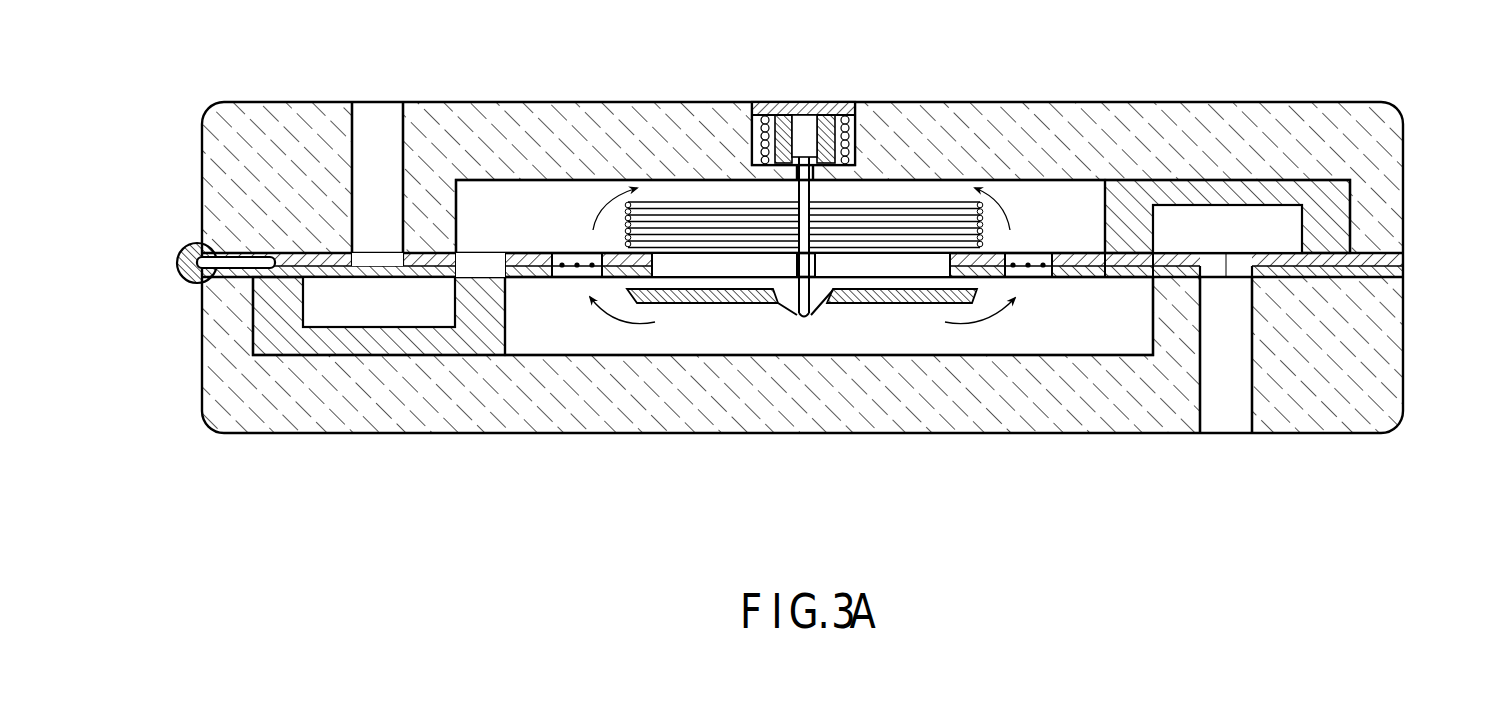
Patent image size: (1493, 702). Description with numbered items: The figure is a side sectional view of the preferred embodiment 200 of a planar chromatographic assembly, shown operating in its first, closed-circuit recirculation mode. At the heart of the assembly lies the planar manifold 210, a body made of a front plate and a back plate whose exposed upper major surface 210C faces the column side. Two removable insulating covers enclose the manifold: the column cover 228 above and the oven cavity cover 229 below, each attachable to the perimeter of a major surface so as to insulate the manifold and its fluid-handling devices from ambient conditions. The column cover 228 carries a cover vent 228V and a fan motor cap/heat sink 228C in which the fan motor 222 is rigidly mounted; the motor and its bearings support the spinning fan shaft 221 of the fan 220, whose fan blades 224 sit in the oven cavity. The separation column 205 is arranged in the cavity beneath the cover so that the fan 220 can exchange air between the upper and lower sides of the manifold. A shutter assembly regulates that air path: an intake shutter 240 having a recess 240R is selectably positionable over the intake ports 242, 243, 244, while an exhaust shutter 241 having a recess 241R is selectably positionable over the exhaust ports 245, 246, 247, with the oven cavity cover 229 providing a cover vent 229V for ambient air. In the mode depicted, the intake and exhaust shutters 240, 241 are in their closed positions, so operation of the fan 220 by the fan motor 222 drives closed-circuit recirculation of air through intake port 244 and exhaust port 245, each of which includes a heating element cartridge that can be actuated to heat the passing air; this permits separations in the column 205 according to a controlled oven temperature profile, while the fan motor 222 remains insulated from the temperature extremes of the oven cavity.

The preferred embodiment of the planar chromatographic assembly 200 is at (983, 452).
The separation column 205 is at (738, 243).
The planar manifold 210 is at (1403, 266).
The upper major surface 210C is at (508, 253).
The fan 220 is at (782, 317).
The fan shaft 221 is at (812, 192).
The fan motor 222 is at (816, 104).
The fan blades 224 is at (688, 300).
The column cover 228 is at (634, 155).
The fan motor cap/heat sink 228C is at (760, 104).
The cover vent 228V is at (385, 102).
The oven cavity cover 229 is at (646, 413).
The cover intake vent 229V is at (1227, 422).
The intake shutter 240 is at (255, 342).
The intake shutter recess 240R is at (384, 319).
The exhaust shutter 241 is at (1350, 227).
The exhaust shutter recess 241R is at (1278, 240).
The intake port 242 is at (370, 257).
The intake port 243 is at (480, 260).
The intake port 244 is at (556, 278).
The exhaust port 245 is at (1037, 279).
The exhaust port 246 is at (1117, 257).
The exhaust port 247 is at (1228, 281).